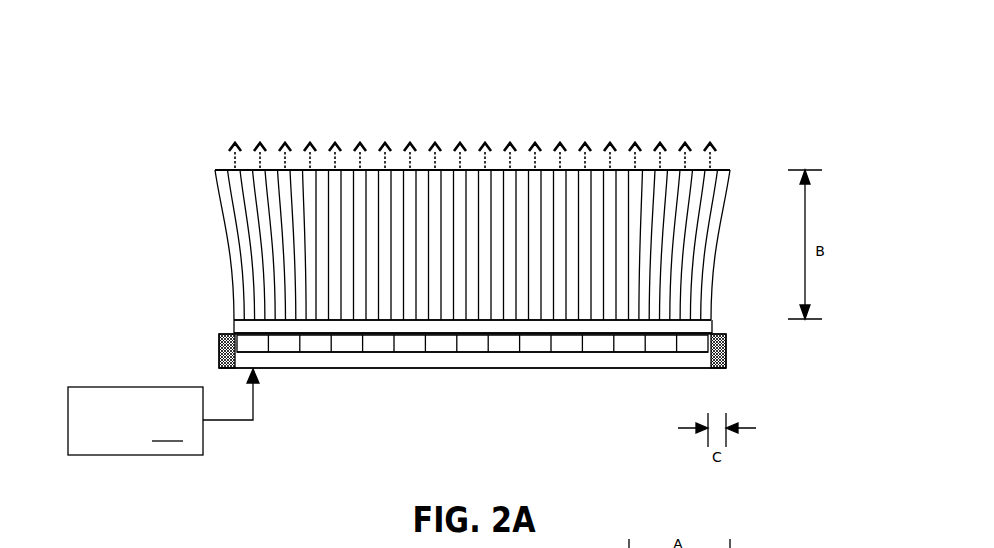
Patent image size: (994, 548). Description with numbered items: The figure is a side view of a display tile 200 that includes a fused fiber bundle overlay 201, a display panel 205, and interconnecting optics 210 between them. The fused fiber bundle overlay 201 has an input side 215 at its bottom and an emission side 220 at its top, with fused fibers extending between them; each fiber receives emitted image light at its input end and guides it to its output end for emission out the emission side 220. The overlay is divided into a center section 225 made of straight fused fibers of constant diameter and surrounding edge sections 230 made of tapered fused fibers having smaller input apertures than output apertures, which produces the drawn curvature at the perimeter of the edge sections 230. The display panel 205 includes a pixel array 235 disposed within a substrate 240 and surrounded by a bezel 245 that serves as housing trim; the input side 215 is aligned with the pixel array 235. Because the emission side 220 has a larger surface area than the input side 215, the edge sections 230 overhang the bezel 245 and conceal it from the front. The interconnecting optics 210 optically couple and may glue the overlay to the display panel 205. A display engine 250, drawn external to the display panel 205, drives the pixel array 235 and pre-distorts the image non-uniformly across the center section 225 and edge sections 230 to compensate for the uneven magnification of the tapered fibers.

The display tile 200 is at (818, 102).
The fused fiber bundle overlay 201 is at (400, 238).
The display panel 205 is at (499, 365).
The interconnecting optics 210 is at (712, 324).
The input side 215 is at (290, 322).
The emission side 220 is at (245, 147).
The center section 225 is at (328, 120).
The edge sections 230 is at (732, 121).
The pixel array 235 is at (428, 353).
The substrate 240 is at (580, 362).
The bezel 245 is at (219, 356).
The display engine 250 is at (163, 412).